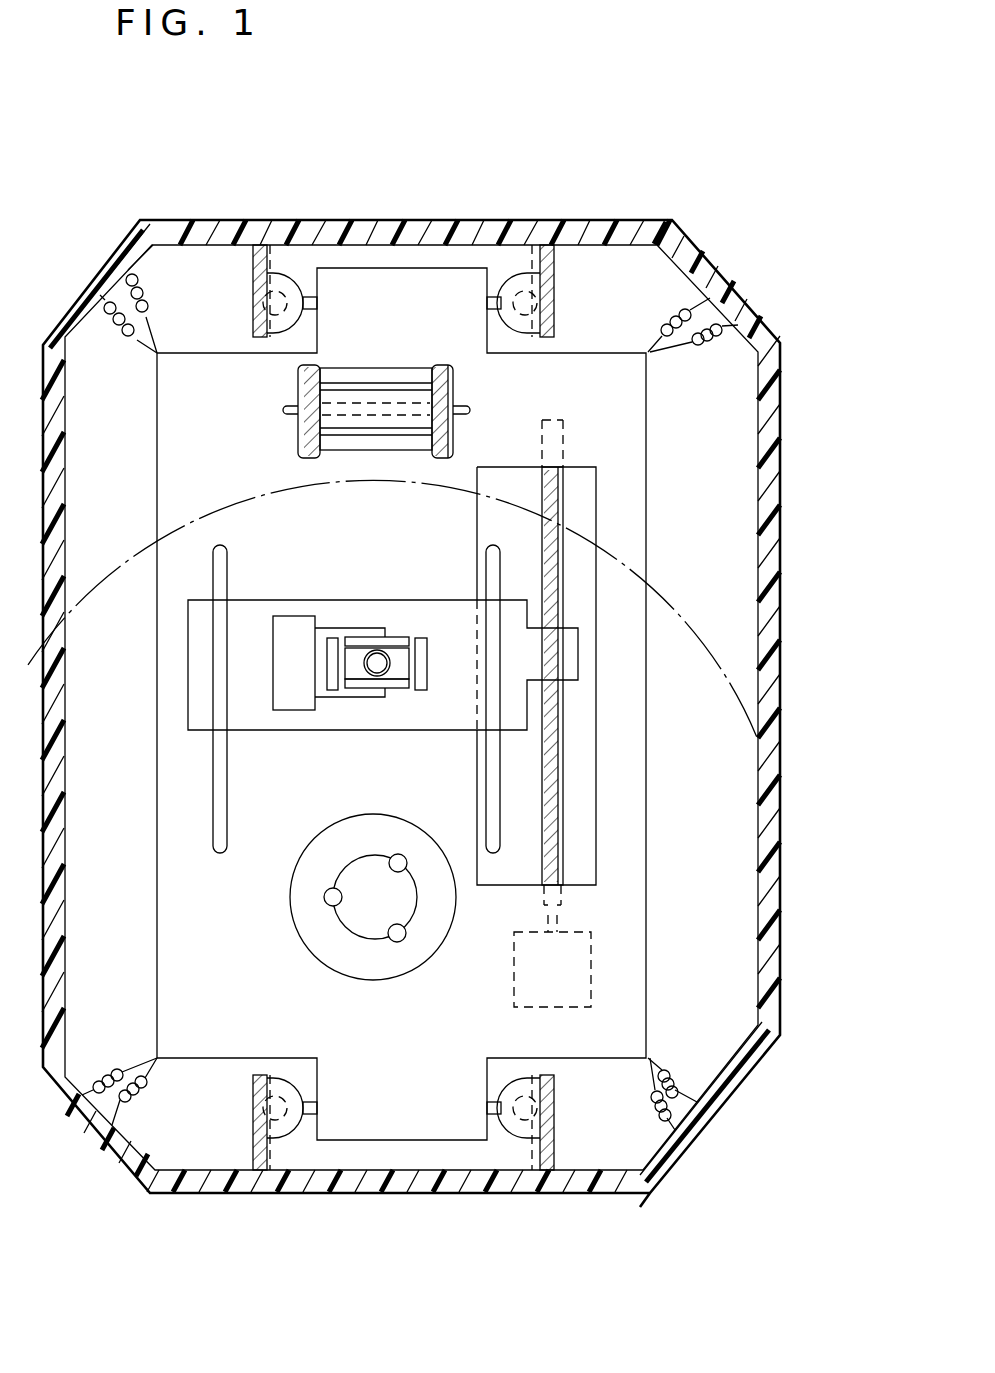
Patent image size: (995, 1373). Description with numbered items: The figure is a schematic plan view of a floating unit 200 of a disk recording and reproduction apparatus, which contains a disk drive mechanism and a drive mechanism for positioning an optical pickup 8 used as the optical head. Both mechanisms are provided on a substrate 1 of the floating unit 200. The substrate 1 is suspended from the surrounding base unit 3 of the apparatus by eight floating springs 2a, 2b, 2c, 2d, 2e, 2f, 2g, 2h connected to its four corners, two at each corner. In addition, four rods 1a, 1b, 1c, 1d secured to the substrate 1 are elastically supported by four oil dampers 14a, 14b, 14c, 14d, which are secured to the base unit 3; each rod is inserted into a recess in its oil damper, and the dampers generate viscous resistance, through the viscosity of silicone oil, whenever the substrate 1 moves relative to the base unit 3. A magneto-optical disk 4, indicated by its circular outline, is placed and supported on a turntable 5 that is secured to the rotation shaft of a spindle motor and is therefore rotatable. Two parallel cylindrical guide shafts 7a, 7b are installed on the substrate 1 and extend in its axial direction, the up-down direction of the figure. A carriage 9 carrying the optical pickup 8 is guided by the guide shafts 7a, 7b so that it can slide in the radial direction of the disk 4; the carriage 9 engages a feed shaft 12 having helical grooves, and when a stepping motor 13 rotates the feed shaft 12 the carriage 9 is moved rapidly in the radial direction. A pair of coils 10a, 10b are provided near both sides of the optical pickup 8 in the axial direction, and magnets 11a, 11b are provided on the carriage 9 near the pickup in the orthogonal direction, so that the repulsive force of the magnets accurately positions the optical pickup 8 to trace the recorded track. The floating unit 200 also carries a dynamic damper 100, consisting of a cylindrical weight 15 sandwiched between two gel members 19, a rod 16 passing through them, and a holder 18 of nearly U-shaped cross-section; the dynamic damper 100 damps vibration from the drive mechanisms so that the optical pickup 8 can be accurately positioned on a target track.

The substrate 1 is at (646, 437).
The rod 1a is at (305, 1114).
The rod 1b is at (500, 1114).
The rod 1c is at (303, 297).
The rod 1d is at (500, 297).
The floating spring 2a is at (700, 302).
The floating spring 2b is at (735, 318).
The floating spring 2c is at (130, 268).
The floating spring 2d is at (128, 338).
The floating spring 2e is at (115, 1105).
The floating spring 2f is at (127, 1088).
The floating spring 2g is at (690, 1128).
The floating spring 2h is at (700, 1088).
The base unit 3 is at (780, 510).
The magneto-optical disk 4 is at (705, 612).
The turntable 5 is at (405, 833).
The guide shaft 7a is at (222, 565).
The guide shaft 7b is at (492, 565).
The optical pickup 8 is at (402, 660).
The carriage 9 is at (288, 612).
The coil 10a is at (397, 688).
The coil 10b is at (360, 645).
The magnet 11a is at (333, 690).
The magnet 11b is at (420, 690).
The feed shaft 12 is at (557, 483).
The stepping motor 13 is at (572, 972).
The oil damper 14a is at (270, 1170).
The oil damper 14b is at (532, 1150).
The oil damper 14c is at (270, 245).
The oil damper 14d is at (535, 265).
The weight 15 is at (375, 392).
The rod 16 is at (290, 410).
The holder 18 is at (455, 378).
The gel member 19 is at (437, 372).
The dynamic damper 100 is at (377, 318).
The floating unit 200 is at (655, 812).